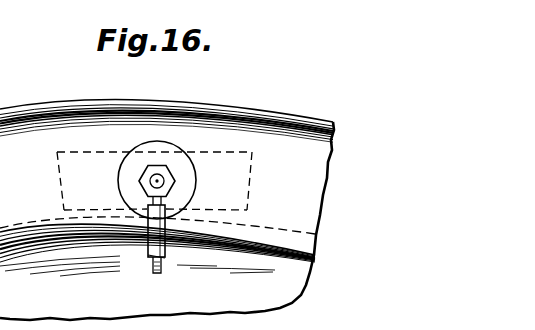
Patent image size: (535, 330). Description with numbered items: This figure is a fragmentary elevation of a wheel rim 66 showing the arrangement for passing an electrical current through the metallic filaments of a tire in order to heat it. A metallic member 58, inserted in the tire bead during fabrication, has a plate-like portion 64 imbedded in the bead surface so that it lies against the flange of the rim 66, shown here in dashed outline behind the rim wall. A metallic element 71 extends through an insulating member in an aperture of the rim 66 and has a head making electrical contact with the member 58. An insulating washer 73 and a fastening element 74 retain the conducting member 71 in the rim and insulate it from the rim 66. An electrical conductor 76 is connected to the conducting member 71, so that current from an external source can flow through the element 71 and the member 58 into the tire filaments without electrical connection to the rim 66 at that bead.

The metallic member 58 is at (92, 177).
The rim 66 is at (8, 134).
The portion of metallic member 64 is at (60, 185).
The insulating washer 73 is at (183, 152).
The metallic element 71 is at (174, 180).
The fastening element 74 is at (171, 187).
The electrical conductor 76 is at (151, 268).